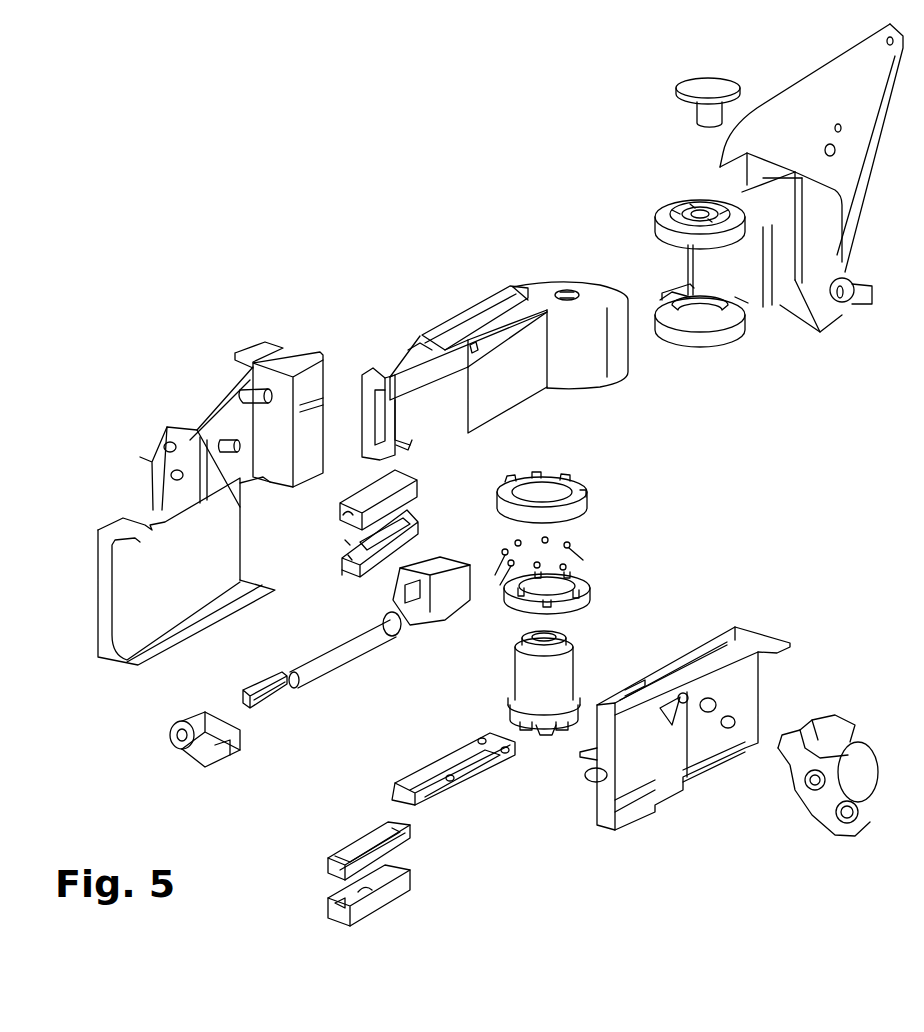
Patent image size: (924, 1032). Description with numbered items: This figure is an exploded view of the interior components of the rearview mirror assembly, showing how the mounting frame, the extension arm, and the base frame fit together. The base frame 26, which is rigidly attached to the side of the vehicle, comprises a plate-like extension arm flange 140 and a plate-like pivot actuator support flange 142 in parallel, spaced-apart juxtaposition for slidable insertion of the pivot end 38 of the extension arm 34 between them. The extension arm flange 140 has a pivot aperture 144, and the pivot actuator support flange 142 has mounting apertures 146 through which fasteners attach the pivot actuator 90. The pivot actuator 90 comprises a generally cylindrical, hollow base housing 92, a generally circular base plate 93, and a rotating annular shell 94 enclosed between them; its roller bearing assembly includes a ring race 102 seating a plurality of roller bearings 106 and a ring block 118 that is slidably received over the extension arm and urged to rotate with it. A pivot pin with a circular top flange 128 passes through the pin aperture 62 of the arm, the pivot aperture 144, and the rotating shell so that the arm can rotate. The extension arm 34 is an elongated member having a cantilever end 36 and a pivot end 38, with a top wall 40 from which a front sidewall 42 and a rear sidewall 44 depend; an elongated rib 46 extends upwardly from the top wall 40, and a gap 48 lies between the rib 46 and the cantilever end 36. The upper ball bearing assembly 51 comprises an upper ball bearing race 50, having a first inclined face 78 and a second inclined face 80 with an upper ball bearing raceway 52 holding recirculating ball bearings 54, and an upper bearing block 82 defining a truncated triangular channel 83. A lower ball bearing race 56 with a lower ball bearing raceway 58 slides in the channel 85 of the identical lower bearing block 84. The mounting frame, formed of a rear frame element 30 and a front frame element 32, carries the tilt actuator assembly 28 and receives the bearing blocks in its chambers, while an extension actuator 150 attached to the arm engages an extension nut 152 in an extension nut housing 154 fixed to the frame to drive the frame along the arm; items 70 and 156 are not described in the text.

The base frame 26 is at (792, 127).
The tilt actuator assembly 28 is at (862, 737).
The rear frame element 30 is at (133, 575).
The front frame element 32 is at (703, 677).
The extension arm 34 is at (482, 350).
The cantilever end 36 is at (398, 447).
The pivot end 38 is at (572, 280).
The top wall 40 is at (475, 352).
The front sidewall 42 is at (513, 390).
The rear sidewall 44 is at (412, 353).
The elongated rib 46 is at (468, 320).
The gap 48 is at (398, 368).
The upper ball bearing race 50 is at (348, 540).
The upper ball bearing assembly 51 is at (332, 568).
The upper ball bearing raceway 52 is at (413, 528).
The recirculating ball bearings 54 is at (410, 522).
The lower ball bearing race 56 is at (398, 853).
The lower ball bearing raceway 58 is at (397, 847).
The pin aperture 62 is at (557, 291).
The drum 70 is at (595, 298).
The first inclined face 78 is at (353, 563).
The second inclined face 80 is at (408, 513).
The upper bearing block 82 is at (336, 510).
The truncated triangular channel 83 is at (345, 518).
The lower bearing block 84 is at (327, 905).
The truncated triangular channel 85 is at (365, 890).
The pivot actuator 90 is at (512, 674).
The base housing 92 is at (567, 665).
The base plate 93 is at (548, 722).
The rotating annular shell 94 is at (560, 636).
The ring race 102 is at (590, 590).
The roller bearings 106 is at (512, 566).
The ring block 118 is at (587, 500).
The circular top flange 128 is at (692, 85).
The extension arm flange 140 is at (660, 227).
The pivot actuator support flange 142 is at (732, 342).
The pivot aperture 144 is at (700, 210).
The mounting apertures 146 is at (718, 322).
The extension actuator 150 is at (383, 623).
The extension nut 152 is at (275, 697).
The extension nut housing 154 is at (182, 742).
The base plate 156 is at (473, 762).